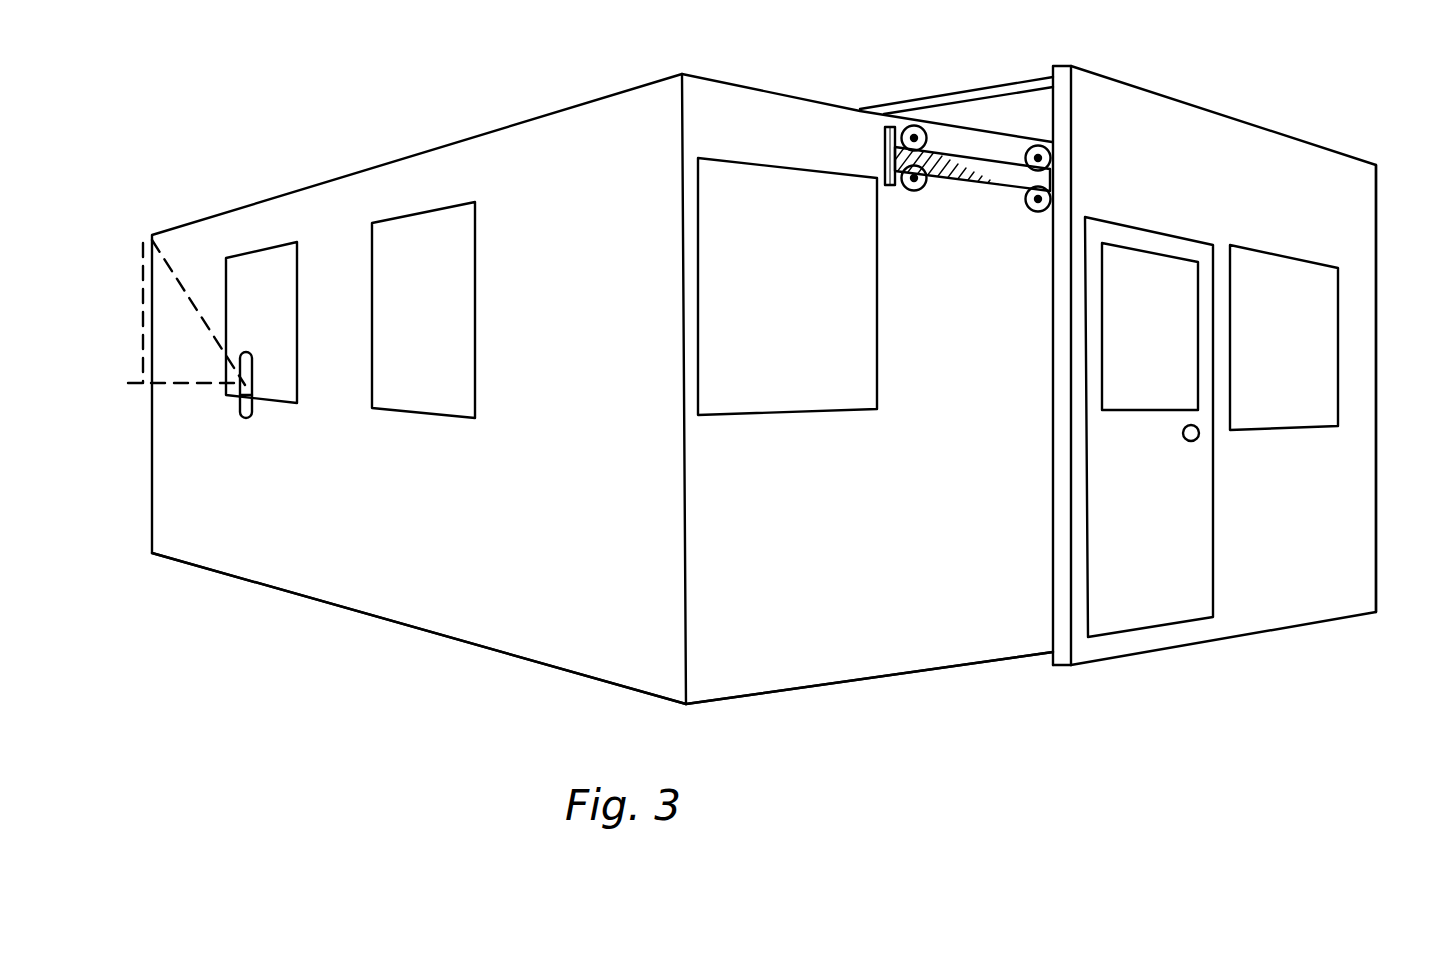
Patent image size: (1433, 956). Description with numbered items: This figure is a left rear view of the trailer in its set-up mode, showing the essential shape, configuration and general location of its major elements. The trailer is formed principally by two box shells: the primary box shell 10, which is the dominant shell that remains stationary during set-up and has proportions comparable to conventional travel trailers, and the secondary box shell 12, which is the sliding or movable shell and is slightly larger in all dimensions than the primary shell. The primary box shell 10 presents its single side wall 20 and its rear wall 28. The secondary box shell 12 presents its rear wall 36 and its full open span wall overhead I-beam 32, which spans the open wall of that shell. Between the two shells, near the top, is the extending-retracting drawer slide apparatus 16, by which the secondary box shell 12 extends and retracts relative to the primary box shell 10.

The primary box shell 10 is at (905, 685).
The secondary box shell 12 is at (1272, 648).
The drawer slide apparatus 16 is at (998, 203).
The single side wall 20 is at (327, 588).
The rear wall 28 is at (1000, 642).
The full open span wall overhead I-beam 32 is at (1010, 57).
The rear wall 36 is at (1358, 511).